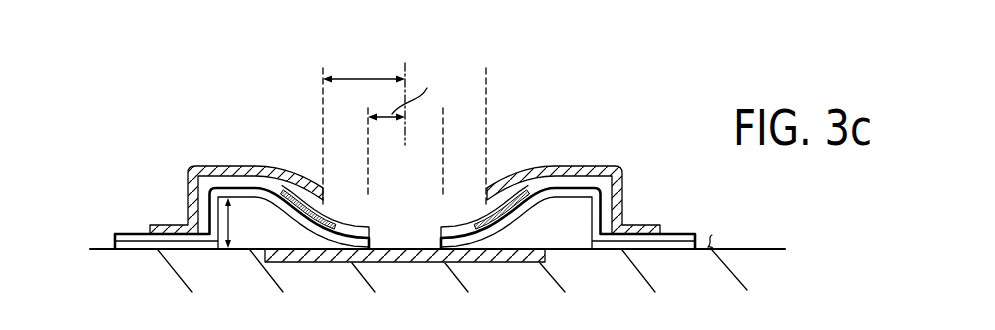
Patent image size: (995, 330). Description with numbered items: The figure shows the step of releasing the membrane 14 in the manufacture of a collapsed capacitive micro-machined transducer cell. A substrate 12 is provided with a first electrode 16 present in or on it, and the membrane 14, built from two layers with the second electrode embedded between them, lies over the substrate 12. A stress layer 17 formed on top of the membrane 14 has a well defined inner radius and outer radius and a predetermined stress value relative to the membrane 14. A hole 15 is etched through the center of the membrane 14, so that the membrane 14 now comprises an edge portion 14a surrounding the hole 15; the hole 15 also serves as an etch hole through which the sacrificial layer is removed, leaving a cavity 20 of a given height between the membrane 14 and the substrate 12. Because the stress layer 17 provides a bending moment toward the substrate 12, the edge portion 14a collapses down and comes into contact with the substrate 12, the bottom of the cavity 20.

The substrate 12 is at (755, 270).
The membrane 14 is at (713, 241).
The edge portion 14a is at (352, 226).
The hole 15 is at (412, 238).
The first electrode 16 is at (413, 263).
The stress layer 17 is at (228, 165).
The cavity 20 is at (578, 213).